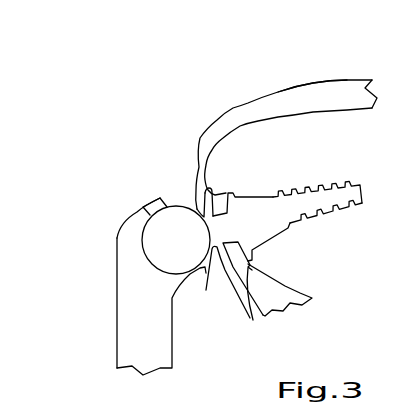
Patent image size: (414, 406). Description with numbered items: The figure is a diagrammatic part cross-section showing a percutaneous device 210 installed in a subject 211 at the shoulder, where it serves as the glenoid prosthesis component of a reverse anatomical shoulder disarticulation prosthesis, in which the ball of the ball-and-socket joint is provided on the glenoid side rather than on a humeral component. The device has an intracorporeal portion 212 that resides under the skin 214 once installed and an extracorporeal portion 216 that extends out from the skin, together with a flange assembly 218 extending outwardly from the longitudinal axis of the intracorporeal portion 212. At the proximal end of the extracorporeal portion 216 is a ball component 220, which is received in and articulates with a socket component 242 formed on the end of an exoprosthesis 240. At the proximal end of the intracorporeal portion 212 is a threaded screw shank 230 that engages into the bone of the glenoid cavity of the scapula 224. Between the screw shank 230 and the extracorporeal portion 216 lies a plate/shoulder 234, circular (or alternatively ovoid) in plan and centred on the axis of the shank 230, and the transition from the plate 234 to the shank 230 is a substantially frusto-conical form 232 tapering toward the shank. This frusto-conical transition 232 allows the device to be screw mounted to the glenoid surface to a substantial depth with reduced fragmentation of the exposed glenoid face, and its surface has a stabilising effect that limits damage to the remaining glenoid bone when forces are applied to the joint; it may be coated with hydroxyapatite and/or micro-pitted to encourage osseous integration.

The percutaneous device 210 is at (284, 248).
The subject 211 is at (289, 82).
The intracorporeal portion 212 is at (253, 187).
The skin 214 is at (202, 134).
The extracorporeal portion 216 is at (172, 174).
The flange assembly 218 is at (206, 290).
The ball component 220 is at (158, 227).
The scapula 224 is at (327, 127).
The threaded screw shank 230 is at (340, 210).
The frusto-conical transition 232 is at (262, 213).
The plate/shoulder 234 is at (224, 268).
The exoprosthesis 240 is at (102, 327).
The socket component 242 is at (130, 216).